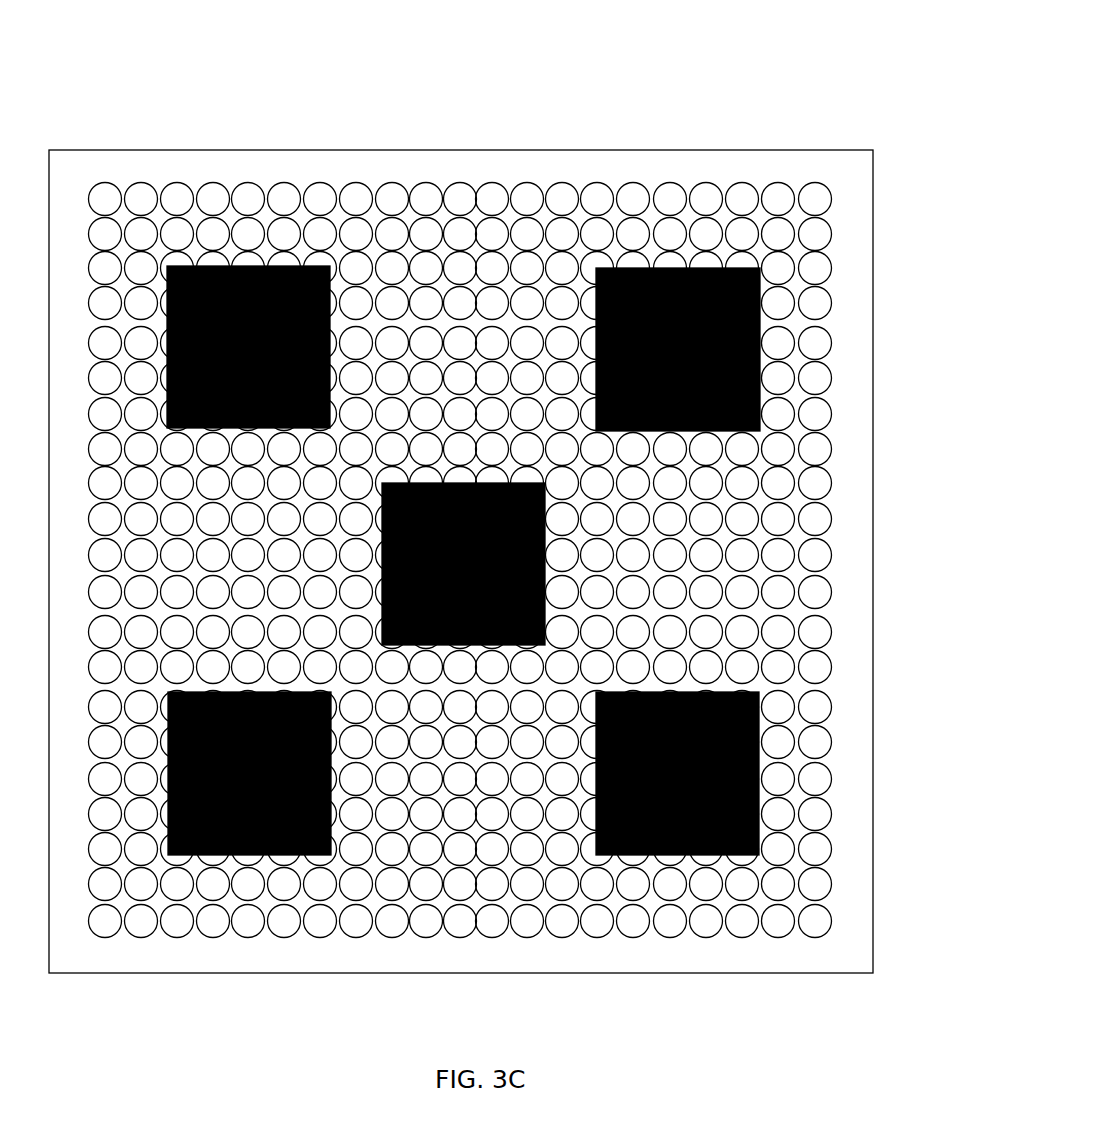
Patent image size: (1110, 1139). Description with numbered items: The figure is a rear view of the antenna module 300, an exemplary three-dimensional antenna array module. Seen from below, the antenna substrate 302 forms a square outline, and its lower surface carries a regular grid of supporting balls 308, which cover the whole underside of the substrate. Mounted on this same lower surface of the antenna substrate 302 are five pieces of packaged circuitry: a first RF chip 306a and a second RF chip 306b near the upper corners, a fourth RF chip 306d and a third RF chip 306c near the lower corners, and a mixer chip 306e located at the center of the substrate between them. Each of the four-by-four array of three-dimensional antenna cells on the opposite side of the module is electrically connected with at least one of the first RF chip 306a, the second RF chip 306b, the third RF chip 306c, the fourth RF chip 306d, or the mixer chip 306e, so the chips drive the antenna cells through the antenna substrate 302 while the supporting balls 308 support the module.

The antenna module 300 is at (700, 85).
The antenna substrate 302 is at (127, 150).
The supporting balls 308 is at (187, 186).
The first RF chip 306a is at (248, 347).
The second RF chip 306b is at (678, 349).
The third RF chip 306c is at (677, 773).
The fourth RF chip 306d is at (249, 773).
The mixer chip 306e is at (463, 564).